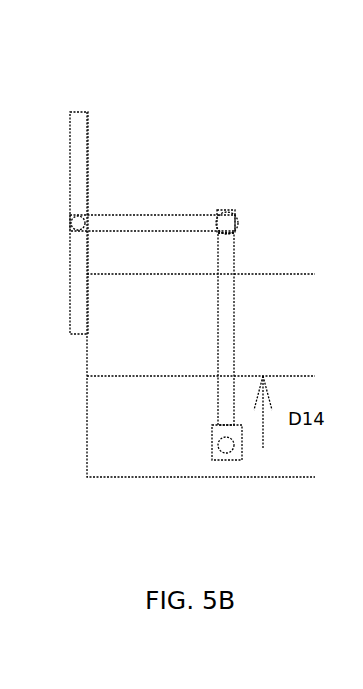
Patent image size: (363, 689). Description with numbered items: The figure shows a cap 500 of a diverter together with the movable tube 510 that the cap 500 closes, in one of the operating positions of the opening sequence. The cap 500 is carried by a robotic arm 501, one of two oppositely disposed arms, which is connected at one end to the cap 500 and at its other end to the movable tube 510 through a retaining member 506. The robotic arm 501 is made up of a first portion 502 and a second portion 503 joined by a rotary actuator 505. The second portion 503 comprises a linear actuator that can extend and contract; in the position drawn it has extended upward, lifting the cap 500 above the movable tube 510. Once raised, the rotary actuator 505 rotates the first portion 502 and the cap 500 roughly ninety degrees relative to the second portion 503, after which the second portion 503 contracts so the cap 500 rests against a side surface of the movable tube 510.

The cap 500 is at (72, 125).
The robotic arm 501 is at (218, 328).
The first portion 502 is at (155, 222).
The second portion 503 is at (225, 250).
The rotary actuator 505 is at (223, 226).
The retaining member 506 is at (226, 448).
The movable tube 510 is at (146, 450).